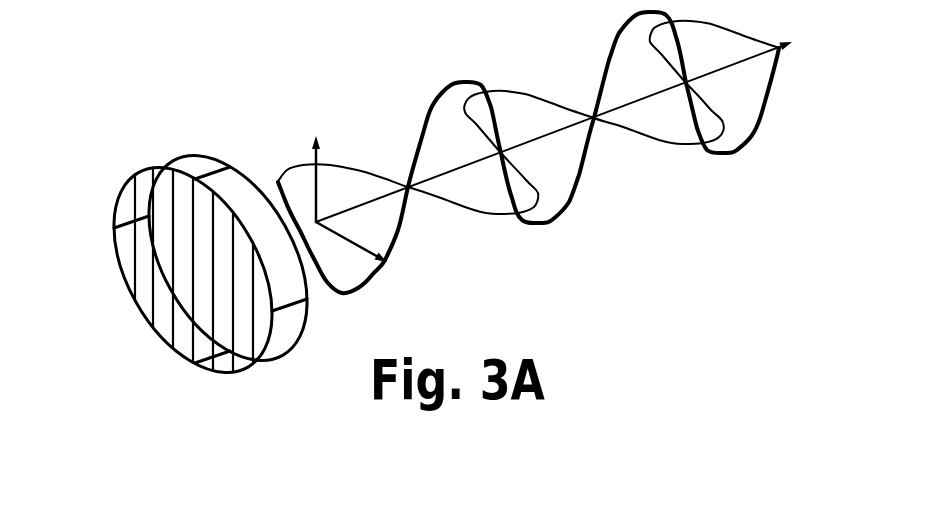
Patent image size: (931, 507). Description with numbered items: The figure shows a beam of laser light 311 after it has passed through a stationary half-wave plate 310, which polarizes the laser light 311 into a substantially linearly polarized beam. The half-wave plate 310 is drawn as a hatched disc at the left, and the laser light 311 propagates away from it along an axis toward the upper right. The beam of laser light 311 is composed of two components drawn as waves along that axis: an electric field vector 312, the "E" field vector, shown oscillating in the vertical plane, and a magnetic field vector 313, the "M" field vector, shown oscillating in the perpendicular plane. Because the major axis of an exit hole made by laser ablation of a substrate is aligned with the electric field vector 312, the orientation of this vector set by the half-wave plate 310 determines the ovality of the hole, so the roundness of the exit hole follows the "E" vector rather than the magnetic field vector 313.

The half-wave plate 310 is at (130, 337).
The laser light 311 is at (792, 44).
The electric field vector 312 is at (583, 180).
The magnetic field vector 313 is at (502, 213).